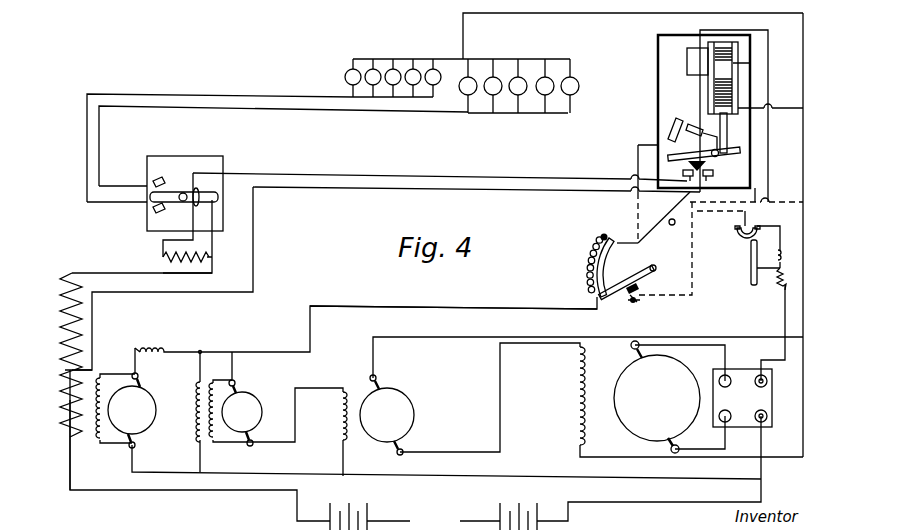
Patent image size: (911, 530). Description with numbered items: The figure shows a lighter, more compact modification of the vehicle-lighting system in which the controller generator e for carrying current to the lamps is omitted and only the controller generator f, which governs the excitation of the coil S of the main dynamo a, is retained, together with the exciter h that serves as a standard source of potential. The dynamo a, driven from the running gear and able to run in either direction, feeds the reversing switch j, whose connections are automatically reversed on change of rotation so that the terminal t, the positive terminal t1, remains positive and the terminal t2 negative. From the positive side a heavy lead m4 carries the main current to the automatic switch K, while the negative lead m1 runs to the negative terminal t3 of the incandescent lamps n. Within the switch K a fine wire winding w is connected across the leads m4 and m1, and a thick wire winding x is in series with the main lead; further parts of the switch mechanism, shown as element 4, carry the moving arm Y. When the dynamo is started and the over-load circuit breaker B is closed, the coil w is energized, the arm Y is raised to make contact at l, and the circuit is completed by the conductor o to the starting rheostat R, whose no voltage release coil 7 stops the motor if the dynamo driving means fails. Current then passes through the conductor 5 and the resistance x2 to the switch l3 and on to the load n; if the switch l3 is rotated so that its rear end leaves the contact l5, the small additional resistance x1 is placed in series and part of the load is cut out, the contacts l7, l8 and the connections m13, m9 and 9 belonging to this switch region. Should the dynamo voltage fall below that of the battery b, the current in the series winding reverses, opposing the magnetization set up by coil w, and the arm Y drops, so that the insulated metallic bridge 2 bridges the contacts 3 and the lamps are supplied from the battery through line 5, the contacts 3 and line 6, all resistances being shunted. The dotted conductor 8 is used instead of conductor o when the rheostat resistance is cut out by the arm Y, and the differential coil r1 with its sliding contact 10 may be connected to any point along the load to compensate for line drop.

The incandescent lamps n is at (460, 106).
The contact l is at (188, 156).
The switch l3 is at (184, 206).
The contact l5 is at (220, 192).
The contact l7 is at (150, 184).
The contact l8 is at (150, 211).
The line 6 is at (471, 180).
The conductor 5 is at (483, 192).
The conductor 9 is at (453, 300).
The conductor 8 is at (638, 216).
The conductor o is at (664, 217).
The additional resistance x1 is at (163, 258).
The conductor m13 is at (176, 276).
The resistance x2 is at (82, 312).
The conductor m9 is at (70, 456).
The differential coil r1 is at (156, 346).
The sliding contact 10 is at (200, 354).
The controller generator e is at (126, 410).
The positive terminal t1 is at (193, 412).
The exciter h is at (235, 413).
The negative terminal t3 is at (342, 408).
The controller generator f is at (387, 415).
The exciting coil S is at (578, 398).
The dynamo a is at (657, 397).
The reversing switch j is at (772, 397).
The switch terminal t is at (768, 378).
The negative terminal t2 is at (768, 416).
The battery b is at (433, 516).
The starting rheostat R is at (621, 267).
The no voltage release coil 7 is at (633, 305).
The automatic switch K is at (704, 111).
The thick wire winding x is at (723, 97).
The fine wire winding w is at (714, 58).
The armature 4 is at (681, 118).
The moving arm Y is at (730, 154).
The contacts 3 is at (683, 173).
The insulated metallic bridge 2 is at (696, 183).
The negative lead m1 is at (803, 148).
The over-load circuit breaker B is at (756, 255).
The heavy lead m4 is at (784, 296).